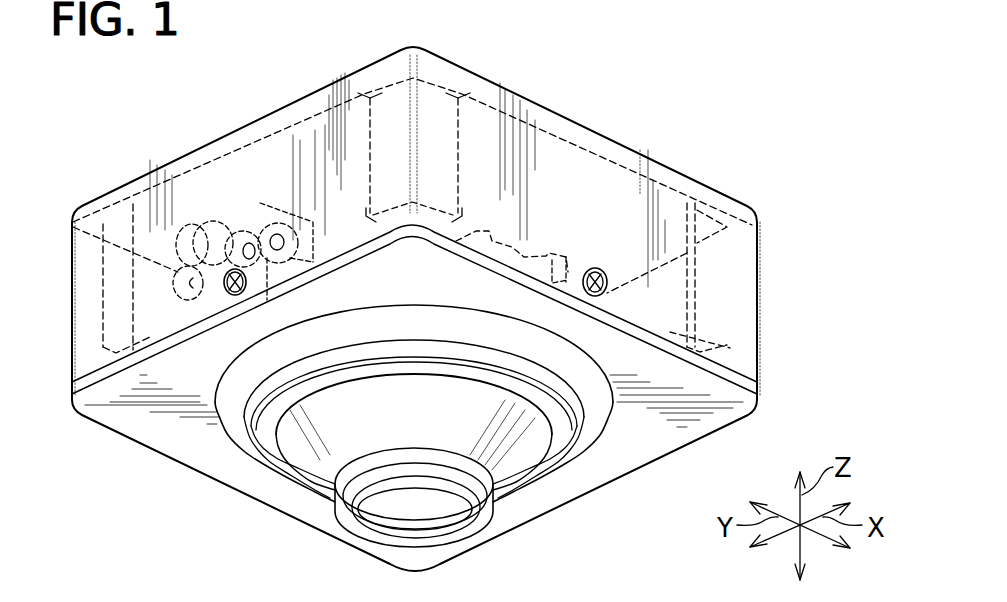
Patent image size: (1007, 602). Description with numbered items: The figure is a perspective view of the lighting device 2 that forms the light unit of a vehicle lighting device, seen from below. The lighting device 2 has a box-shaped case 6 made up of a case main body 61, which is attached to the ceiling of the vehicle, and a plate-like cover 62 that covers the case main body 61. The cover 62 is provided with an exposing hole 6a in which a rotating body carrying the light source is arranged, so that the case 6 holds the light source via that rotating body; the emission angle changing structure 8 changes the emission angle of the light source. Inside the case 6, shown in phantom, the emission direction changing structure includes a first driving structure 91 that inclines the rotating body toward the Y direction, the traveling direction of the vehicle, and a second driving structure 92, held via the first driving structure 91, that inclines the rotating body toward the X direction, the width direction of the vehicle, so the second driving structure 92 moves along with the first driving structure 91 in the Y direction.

The lighting device 2 is at (694, 96).
The case 6 is at (818, 372).
The case main body 61 is at (747, 352).
The cover 62 is at (717, 415).
The exposing hole 6a is at (535, 462).
The emission angle changing structure 8 is at (427, 508).
The first driving structure 91 is at (222, 207).
The second driving structure 92 is at (549, 257).